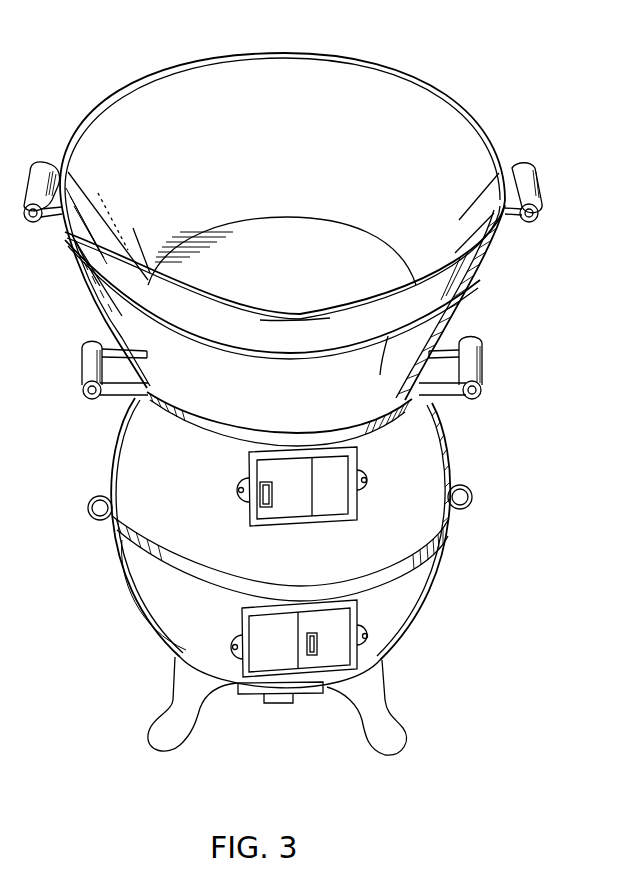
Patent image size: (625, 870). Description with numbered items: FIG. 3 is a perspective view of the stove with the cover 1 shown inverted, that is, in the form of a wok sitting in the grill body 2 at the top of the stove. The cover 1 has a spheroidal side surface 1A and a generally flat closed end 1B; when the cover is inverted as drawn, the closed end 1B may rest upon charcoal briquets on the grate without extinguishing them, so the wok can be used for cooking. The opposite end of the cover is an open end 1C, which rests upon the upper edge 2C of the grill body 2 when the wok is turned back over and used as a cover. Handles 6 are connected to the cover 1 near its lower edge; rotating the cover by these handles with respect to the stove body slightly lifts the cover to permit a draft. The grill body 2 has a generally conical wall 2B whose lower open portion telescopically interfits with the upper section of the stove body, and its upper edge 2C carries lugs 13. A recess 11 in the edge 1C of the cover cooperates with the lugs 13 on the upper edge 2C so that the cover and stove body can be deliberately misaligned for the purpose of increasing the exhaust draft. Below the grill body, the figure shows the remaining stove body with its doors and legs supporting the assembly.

The cover 1 is at (481, 270).
The spheroidal side surface 1A is at (168, 118).
The generally flat closed end 1B is at (268, 238).
The open end 1C is at (389, 66).
The grill body 2 is at (197, 395).
The generally conical wall 2B is at (78, 258).
The upper edge 2C is at (90, 297).
The handles 6 is at (529, 195).
The recess 11 is at (327, 310).
The lugs 13 is at (383, 362).